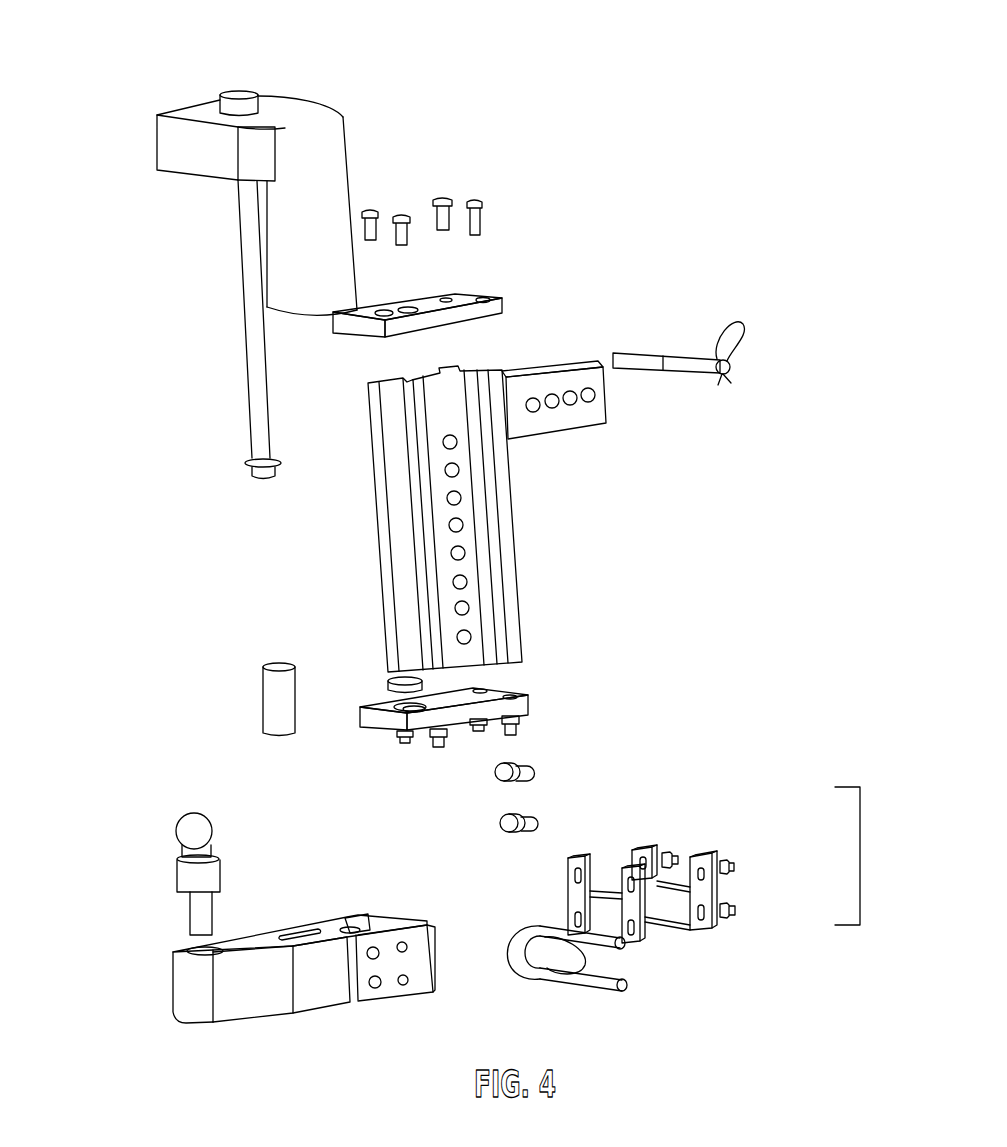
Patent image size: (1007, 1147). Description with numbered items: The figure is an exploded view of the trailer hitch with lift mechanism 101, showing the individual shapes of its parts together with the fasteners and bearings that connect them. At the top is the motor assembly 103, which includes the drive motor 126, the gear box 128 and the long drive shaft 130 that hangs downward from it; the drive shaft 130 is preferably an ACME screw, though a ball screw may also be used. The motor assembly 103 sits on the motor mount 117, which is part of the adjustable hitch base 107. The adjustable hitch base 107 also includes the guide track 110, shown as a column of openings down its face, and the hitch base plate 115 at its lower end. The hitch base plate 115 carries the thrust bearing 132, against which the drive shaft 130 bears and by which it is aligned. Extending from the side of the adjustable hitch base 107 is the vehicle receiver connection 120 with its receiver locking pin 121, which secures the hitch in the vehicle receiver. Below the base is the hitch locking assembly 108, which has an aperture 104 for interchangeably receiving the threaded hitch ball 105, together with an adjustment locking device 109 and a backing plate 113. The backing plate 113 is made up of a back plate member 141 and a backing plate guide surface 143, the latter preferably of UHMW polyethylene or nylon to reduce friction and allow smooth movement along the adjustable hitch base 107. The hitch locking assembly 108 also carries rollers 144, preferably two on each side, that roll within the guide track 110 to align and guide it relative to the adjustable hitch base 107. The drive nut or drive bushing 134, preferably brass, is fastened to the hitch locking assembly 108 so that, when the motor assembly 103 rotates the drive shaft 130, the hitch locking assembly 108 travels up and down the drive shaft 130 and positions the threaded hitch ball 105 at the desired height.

The trailer hitch with lift mechanism 101 is at (526, 89).
The motor assembly 103 is at (183, 101).
The aperture 104 is at (183, 947).
The threaded hitch ball 105 is at (180, 815).
The adjustable hitch base 107 is at (512, 535).
The hitch locking assembly 108 is at (275, 928).
The adjustment locking device 109 is at (630, 985).
The guide track 110 is at (472, 518).
The backing plate 113 is at (860, 857).
The hitch base plate 115 is at (530, 703).
The motor mount 117 is at (505, 306).
The vehicle receiver connection 120 is at (600, 405).
The receiver locking pin 121 is at (692, 371).
The drive motor 126 is at (350, 160).
The gear box 128 is at (275, 97).
The drive shaft 130 is at (243, 330).
The thrust bearing 132 is at (387, 687).
The drive nut or drive bushing 134 is at (258, 697).
The back plate member 141 is at (692, 929).
The backing plate guide surface 143 is at (567, 882).
The rollers 144 is at (532, 768).